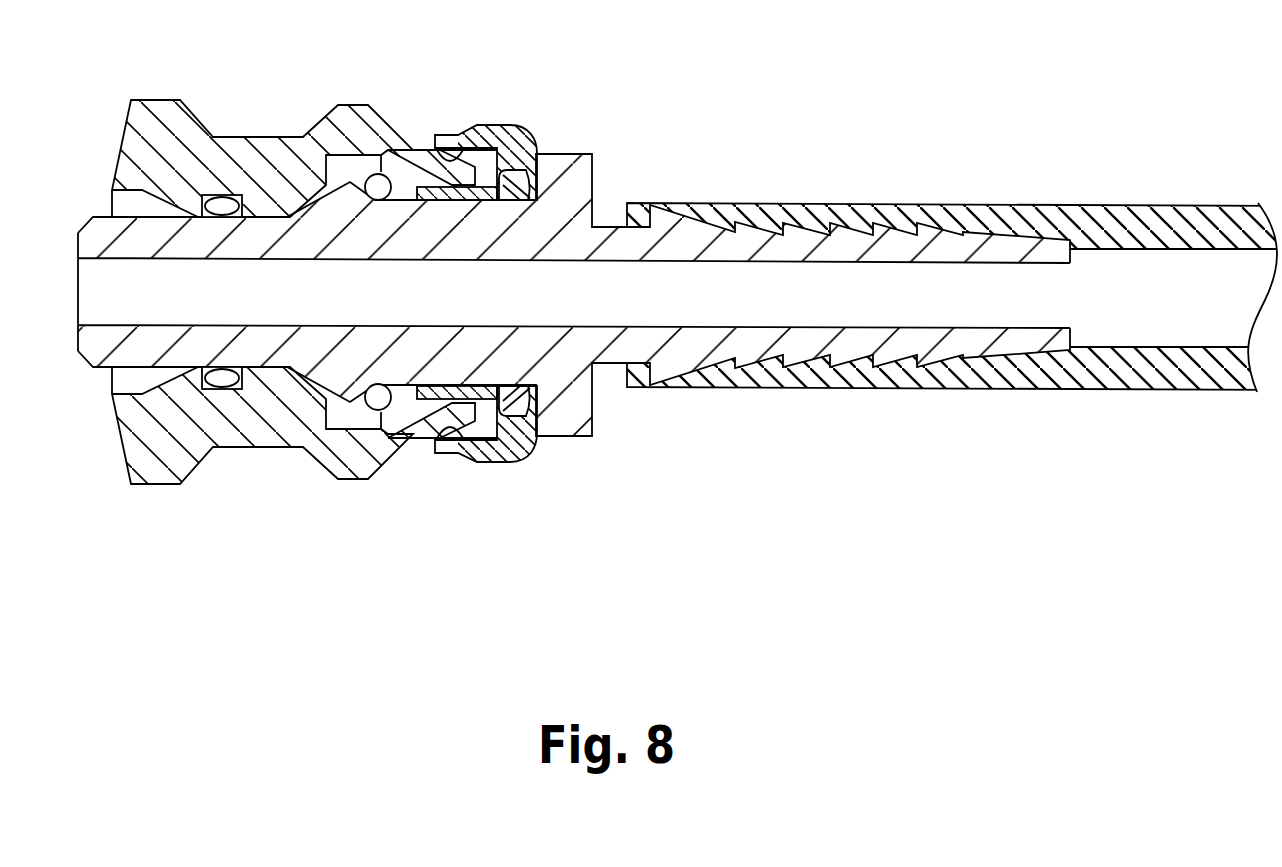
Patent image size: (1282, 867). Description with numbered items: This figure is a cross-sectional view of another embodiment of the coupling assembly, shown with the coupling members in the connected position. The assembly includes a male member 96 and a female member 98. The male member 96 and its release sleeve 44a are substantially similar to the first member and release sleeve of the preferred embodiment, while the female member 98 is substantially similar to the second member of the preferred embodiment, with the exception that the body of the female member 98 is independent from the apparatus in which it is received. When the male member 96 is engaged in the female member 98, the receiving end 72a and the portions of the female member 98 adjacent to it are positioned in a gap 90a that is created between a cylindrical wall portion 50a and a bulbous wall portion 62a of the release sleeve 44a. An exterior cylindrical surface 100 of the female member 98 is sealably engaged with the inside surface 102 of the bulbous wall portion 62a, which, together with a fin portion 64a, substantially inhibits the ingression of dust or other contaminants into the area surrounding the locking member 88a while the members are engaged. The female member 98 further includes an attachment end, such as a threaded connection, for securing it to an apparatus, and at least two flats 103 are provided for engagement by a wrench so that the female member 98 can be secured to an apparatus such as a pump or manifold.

The male member 96 is at (600, 166).
The female member 98 is at (256, 126).
The flats 103 is at (155, 90).
The locking member 88a is at (378, 185).
The exterior cylindrical surface 100 is at (418, 148).
The inside surface 102 is at (436, 136).
The receiving end 72a is at (496, 128).
The fin portion 64a is at (540, 190).
The release sleeve 44a is at (528, 448).
The cylindrical wall portion 50a is at (419, 399).
The bulbous wall portion 62a is at (447, 447).
The gap 90a is at (491, 425).